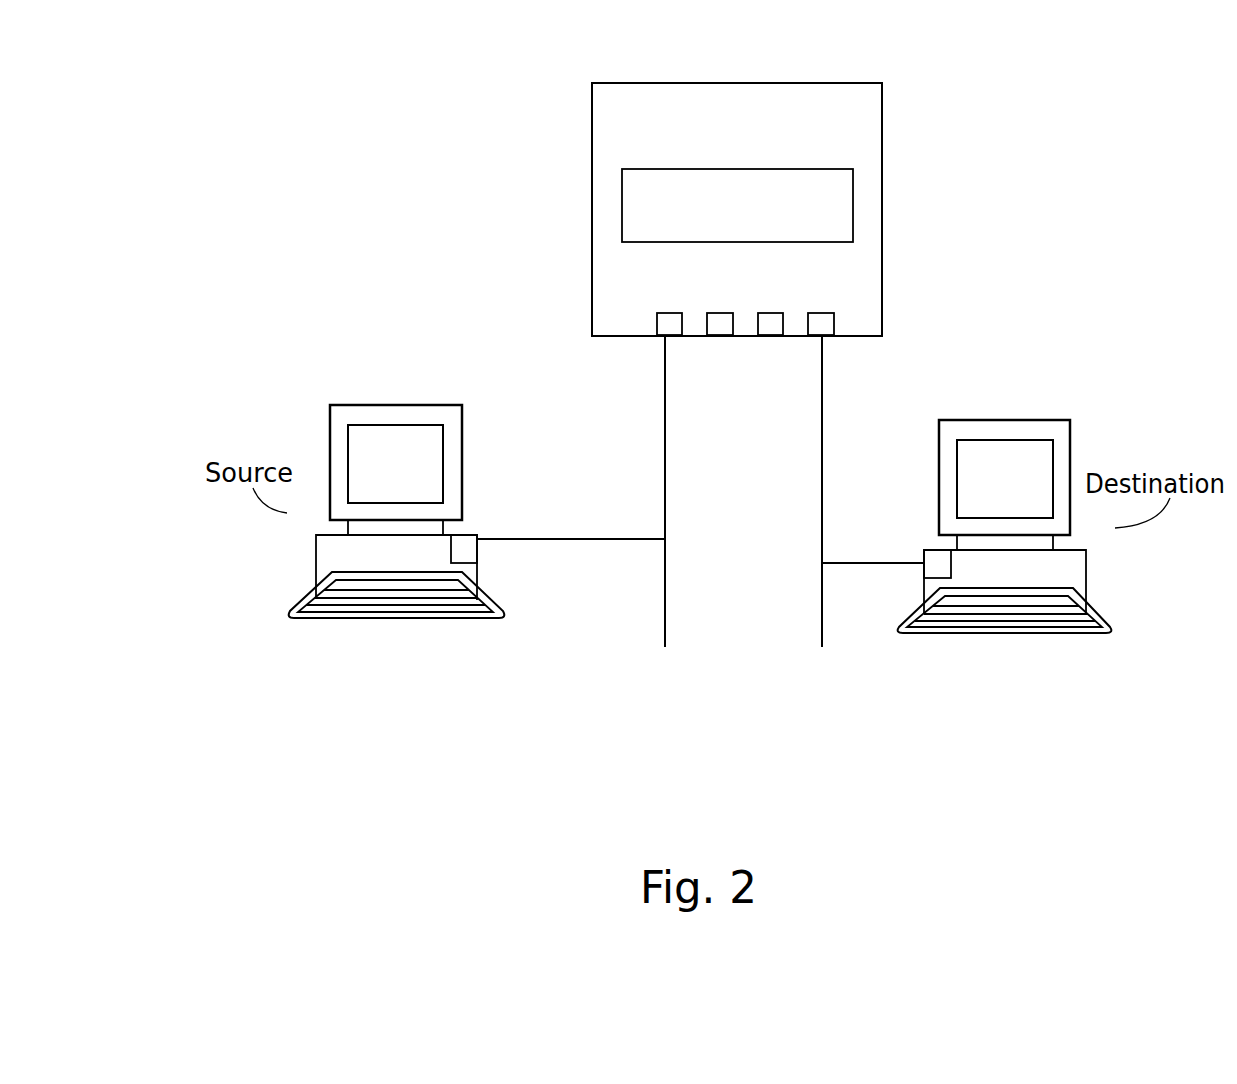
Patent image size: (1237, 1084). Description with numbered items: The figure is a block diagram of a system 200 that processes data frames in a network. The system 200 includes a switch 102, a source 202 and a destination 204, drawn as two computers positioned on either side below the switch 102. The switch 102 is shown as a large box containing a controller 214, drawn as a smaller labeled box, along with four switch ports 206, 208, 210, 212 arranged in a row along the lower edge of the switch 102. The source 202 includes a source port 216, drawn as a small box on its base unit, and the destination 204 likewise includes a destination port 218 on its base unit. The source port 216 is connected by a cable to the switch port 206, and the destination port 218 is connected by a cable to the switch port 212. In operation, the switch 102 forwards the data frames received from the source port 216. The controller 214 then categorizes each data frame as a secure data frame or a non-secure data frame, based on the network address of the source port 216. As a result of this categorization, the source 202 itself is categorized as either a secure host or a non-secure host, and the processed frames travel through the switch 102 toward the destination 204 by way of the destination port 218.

The system 200 is at (427, 193).
The switch 102 is at (738, 82).
The controller 214 is at (659, 168).
The switch port 206 is at (668, 313).
The switch port 208 is at (720, 313).
The switch port 210 is at (783, 293).
The switch port 212 is at (838, 293).
The source 202 is at (398, 405).
The destination 204 is at (1007, 420).
The source port 216 is at (462, 533).
The destination port 218 is at (937, 550).